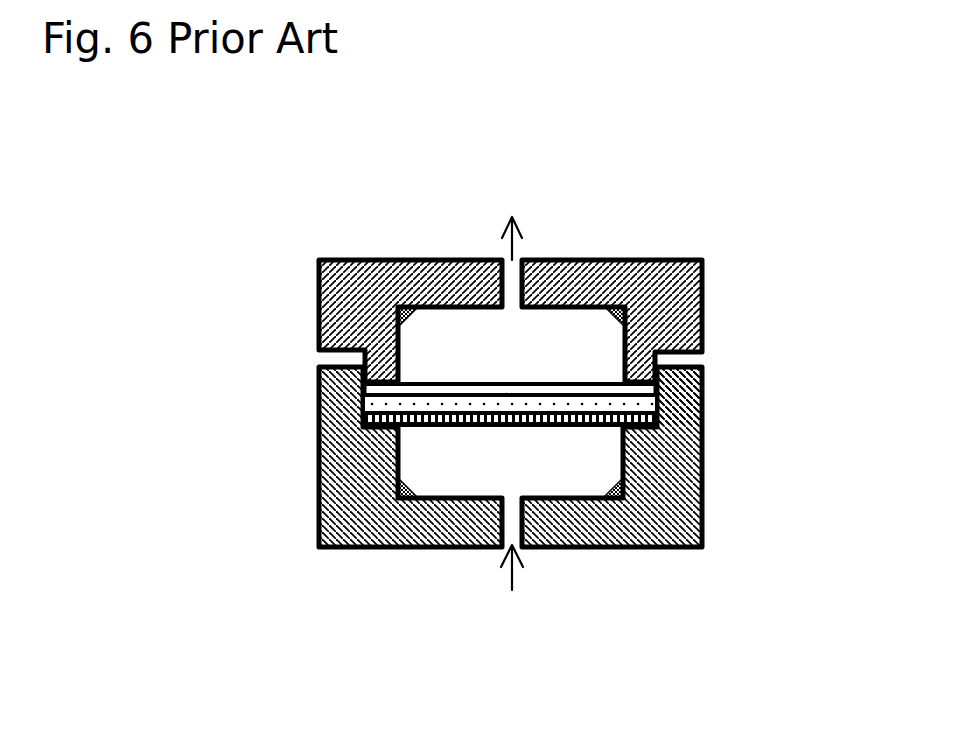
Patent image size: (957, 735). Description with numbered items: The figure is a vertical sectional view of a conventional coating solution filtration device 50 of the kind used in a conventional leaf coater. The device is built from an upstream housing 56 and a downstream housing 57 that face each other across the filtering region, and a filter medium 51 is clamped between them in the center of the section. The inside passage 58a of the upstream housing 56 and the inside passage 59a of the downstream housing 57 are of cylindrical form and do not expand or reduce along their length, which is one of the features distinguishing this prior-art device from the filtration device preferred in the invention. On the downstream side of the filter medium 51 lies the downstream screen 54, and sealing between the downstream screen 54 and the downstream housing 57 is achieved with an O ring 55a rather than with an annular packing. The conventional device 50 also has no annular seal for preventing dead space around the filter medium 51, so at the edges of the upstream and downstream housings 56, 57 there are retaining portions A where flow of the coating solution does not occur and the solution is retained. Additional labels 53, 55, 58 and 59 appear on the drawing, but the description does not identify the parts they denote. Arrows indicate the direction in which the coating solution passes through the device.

The conventional coating solution filtration device 50 is at (318, 300).
The filter medium 51 is at (702, 515).
The lower layer of membrane 53 is at (497, 430).
The downstream screen 54 is at (458, 385).
The lower housing block 55 is at (645, 445).
The O ring 55a is at (663, 384).
The upstream housing 56 is at (335, 478).
The downstream housing 57 is at (318, 338).
The lower opening 58 is at (502, 546).
The inside passage of upstream housing 58a is at (533, 462).
The upper opening 59 is at (518, 257).
The inside passage of downstream housing 59a is at (473, 345).
The retaining portions A is at (610, 315).